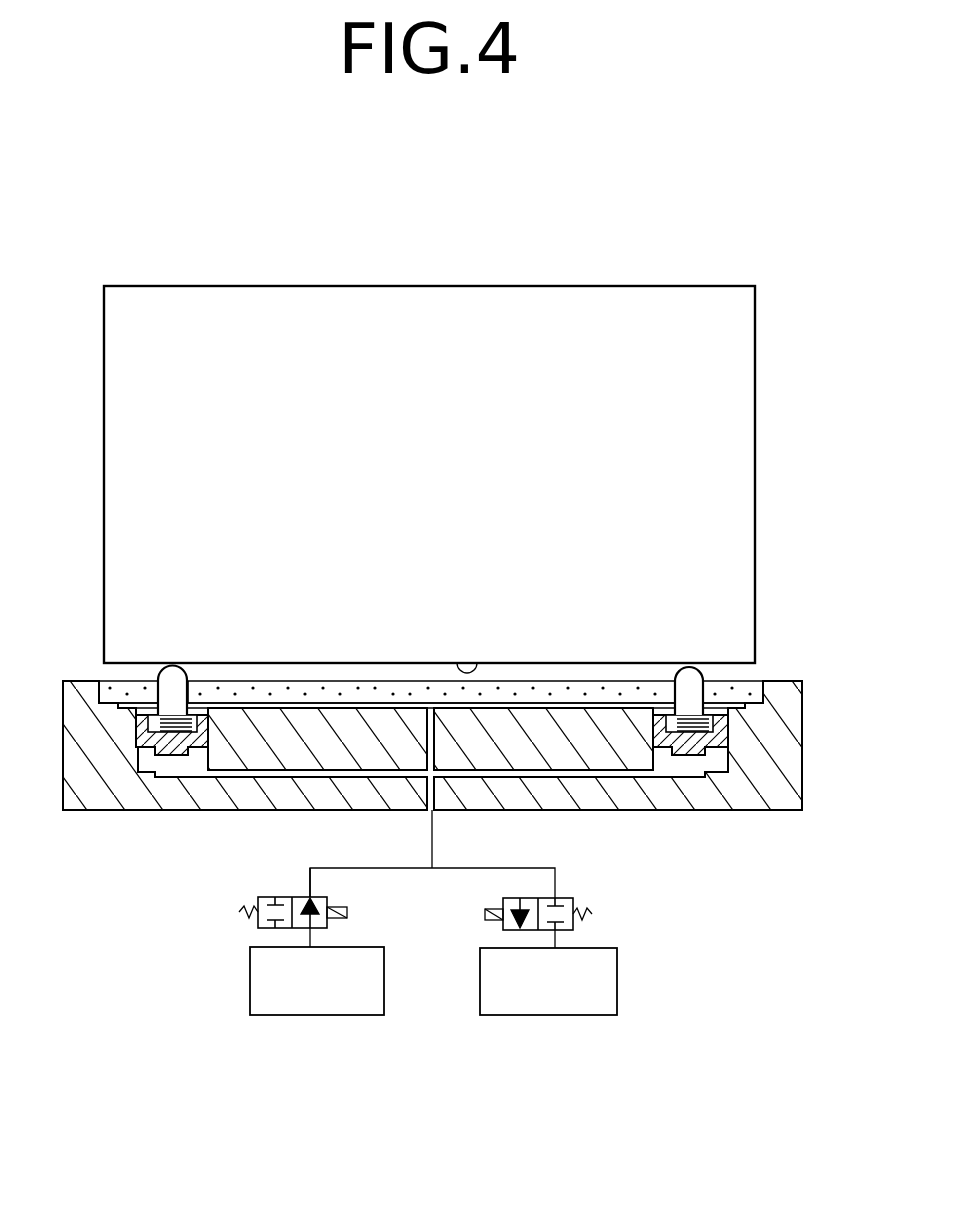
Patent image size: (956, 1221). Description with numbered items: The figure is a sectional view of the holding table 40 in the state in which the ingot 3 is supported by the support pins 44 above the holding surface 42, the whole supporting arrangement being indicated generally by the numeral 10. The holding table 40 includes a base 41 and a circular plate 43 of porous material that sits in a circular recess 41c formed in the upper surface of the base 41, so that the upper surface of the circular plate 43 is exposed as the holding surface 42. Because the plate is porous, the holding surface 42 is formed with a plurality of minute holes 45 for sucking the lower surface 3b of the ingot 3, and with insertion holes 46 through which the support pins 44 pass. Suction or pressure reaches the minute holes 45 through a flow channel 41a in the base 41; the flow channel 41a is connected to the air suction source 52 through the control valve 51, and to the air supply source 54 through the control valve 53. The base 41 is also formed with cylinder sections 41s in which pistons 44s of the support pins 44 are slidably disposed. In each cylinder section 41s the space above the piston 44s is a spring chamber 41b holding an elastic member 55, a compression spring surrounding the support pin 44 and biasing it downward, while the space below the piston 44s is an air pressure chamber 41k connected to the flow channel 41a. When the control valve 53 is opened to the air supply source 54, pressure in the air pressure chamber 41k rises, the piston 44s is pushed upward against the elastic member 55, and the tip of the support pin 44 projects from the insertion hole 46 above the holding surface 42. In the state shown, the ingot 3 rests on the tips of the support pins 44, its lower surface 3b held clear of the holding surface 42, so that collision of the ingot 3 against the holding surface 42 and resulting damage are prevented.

The ingot 3 is at (416, 427).
The lower surface 3b is at (470, 668).
The substrate holding device 10 is at (350, 578).
The holding table 40 is at (806, 701).
The base 41 is at (80, 688).
The flow channel 41a is at (433, 800).
The spring chamber 41b is at (205, 693).
The circular recess 41c is at (528, 698).
The air pressure chamber 41k is at (198, 765).
The cylinder section 41s is at (125, 770).
The holding surface 42 is at (333, 681).
The circular plate 43 is at (283, 690).
The support pin 44 is at (168, 683).
The piston 44s is at (175, 758).
The minute holes 45 is at (393, 693).
The insertion hole 46 is at (193, 712).
The control valve 51 is at (604, 916).
The air suction source 52 is at (619, 970).
The control valve 53 is at (227, 915).
The air supply source 54 is at (249, 968).
The elastic member 55 is at (140, 722).